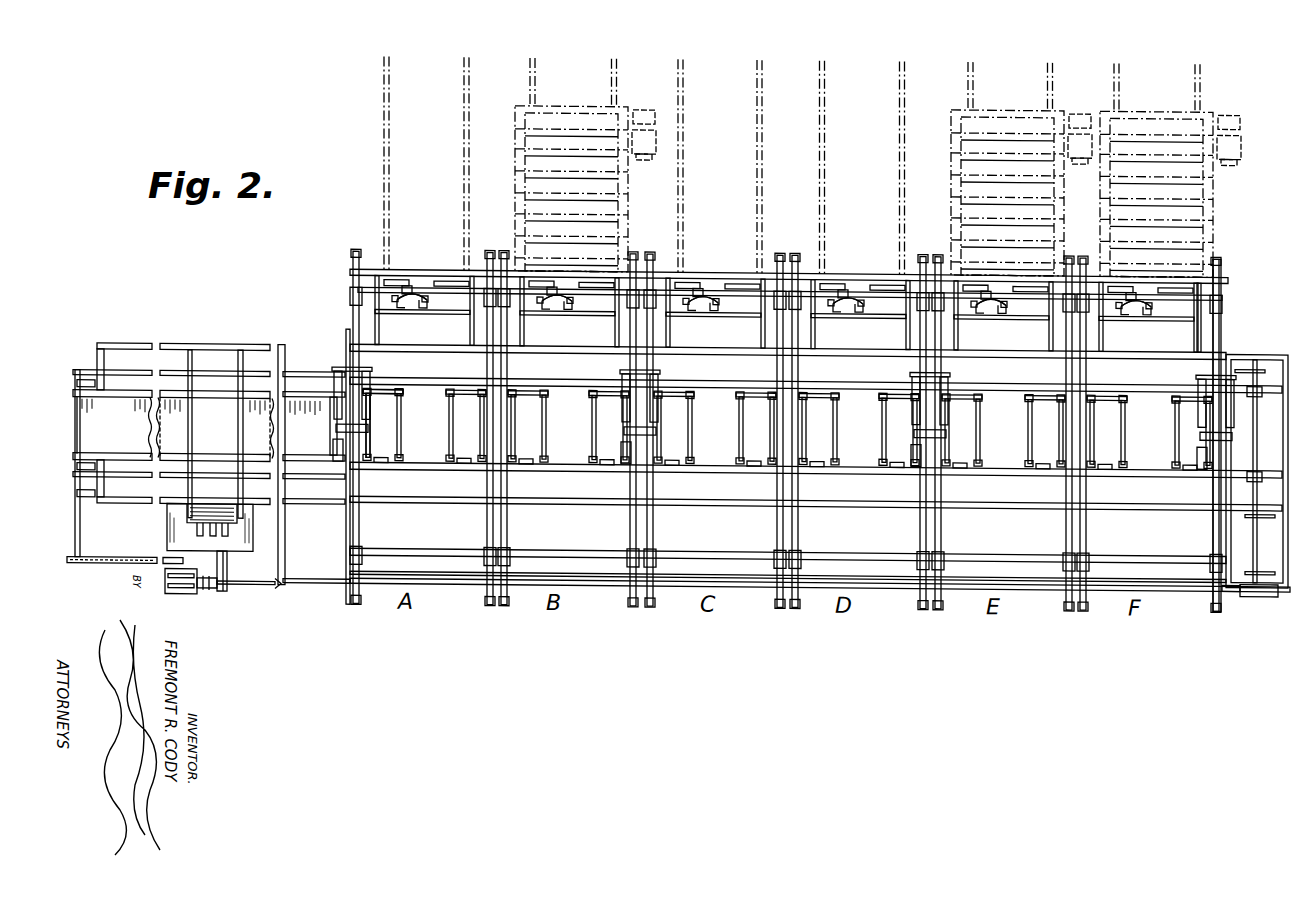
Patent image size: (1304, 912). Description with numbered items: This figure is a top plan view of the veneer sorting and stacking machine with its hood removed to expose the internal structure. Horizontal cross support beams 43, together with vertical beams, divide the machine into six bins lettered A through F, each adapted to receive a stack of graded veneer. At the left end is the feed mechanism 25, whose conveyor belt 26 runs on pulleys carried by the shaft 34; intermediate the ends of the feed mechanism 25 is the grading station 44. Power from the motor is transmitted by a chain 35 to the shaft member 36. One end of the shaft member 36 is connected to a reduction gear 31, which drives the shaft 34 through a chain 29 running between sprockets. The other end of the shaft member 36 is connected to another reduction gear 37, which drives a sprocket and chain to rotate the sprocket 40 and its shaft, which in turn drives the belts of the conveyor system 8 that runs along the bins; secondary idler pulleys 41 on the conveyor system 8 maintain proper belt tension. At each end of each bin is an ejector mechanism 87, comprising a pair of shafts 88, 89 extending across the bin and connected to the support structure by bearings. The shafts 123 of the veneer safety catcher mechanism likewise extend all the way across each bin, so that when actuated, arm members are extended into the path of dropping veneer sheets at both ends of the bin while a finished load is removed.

The conveyor system 8 is at (441, 368).
The feed mechanism 25 is at (220, 344).
The conveyor belt 26 is at (228, 446).
The chain 29 is at (112, 568).
The reduction gear 31 is at (187, 596).
The shaft 34 is at (80, 544).
The chain 35 is at (228, 574).
The shaft member 36 is at (270, 588).
The reduction gear 37 is at (1242, 590).
The sprocket 40 is at (1266, 560).
The secondary idler pulleys 41 is at (1258, 394).
The horizontal cross support beams 43 is at (352, 542).
The grading station 44 is at (173, 524).
The ejector mechanism 87 is at (445, 440).
The shaft 88 is at (370, 420).
The shaft 89 is at (402, 396).
The shaft 123 is at (457, 304).